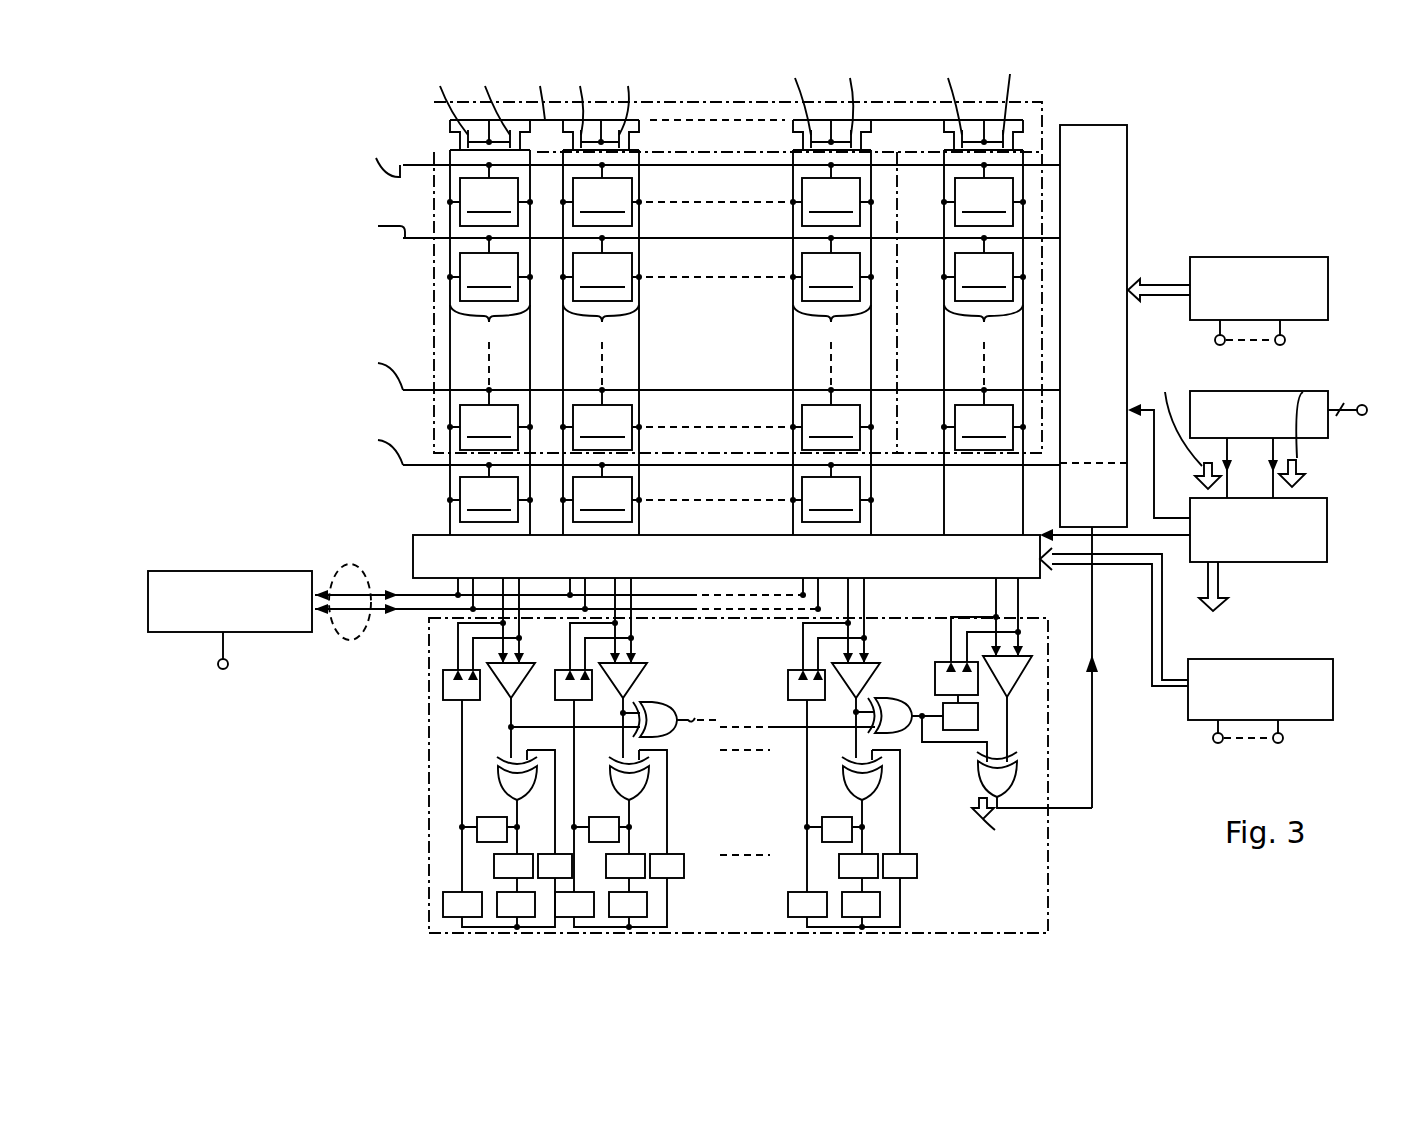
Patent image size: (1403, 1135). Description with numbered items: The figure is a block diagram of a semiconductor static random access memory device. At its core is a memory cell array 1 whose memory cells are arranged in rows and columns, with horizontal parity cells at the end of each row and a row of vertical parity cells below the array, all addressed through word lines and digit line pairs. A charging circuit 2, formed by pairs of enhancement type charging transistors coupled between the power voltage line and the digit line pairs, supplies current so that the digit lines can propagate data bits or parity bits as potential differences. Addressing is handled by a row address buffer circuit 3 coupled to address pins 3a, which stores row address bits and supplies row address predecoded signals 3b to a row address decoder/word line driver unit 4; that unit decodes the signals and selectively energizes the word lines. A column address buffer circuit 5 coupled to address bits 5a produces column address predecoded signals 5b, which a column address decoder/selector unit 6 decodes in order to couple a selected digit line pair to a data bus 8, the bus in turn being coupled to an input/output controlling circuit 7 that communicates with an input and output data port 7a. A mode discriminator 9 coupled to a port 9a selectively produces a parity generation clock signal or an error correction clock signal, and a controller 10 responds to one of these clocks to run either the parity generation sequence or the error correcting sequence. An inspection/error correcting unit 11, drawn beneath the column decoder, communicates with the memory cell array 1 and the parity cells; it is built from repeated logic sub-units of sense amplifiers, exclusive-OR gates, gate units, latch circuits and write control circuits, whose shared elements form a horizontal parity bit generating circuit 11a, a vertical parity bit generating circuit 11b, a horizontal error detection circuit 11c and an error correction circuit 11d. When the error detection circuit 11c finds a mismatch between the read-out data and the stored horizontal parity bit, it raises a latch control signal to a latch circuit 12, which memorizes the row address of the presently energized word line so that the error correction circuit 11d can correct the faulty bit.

The memory cell array 1 is at (430, 160).
The charging circuit 2 is at (1048, 103).
The row address buffer circuit 3 is at (1280, 257).
The address pins 3a is at (1220, 346).
The row address predecoded signals 3b is at (1166, 285).
The row address decoder/word line driver unit 4 is at (1118, 125).
The column address buffer circuit 5 is at (1333, 690).
The address bits 5a is at (1218, 744).
The column address predecoded signals 5b is at (1163, 690).
The column address decoder/selector unit 6 is at (413, 540).
The input/output controlling circuit 7 is at (199, 571).
The input and output data port 7a is at (226, 672).
The data bus 8 is at (348, 566).
The mode discriminator 9 is at (1328, 392).
The port 9a is at (1362, 405).
The controller 10 is at (1328, 540).
The inspection/error correcting unit 11 is at (1048, 897).
The horizontal parity bit generating circuit 11a is at (675, 670).
The vertical parity bit generating circuit 11b is at (899, 781).
The horizontal error detection circuit 11c is at (1025, 748).
The error correction circuit 11d is at (440, 686).
The latch circuit 12 is at (1056, 510).